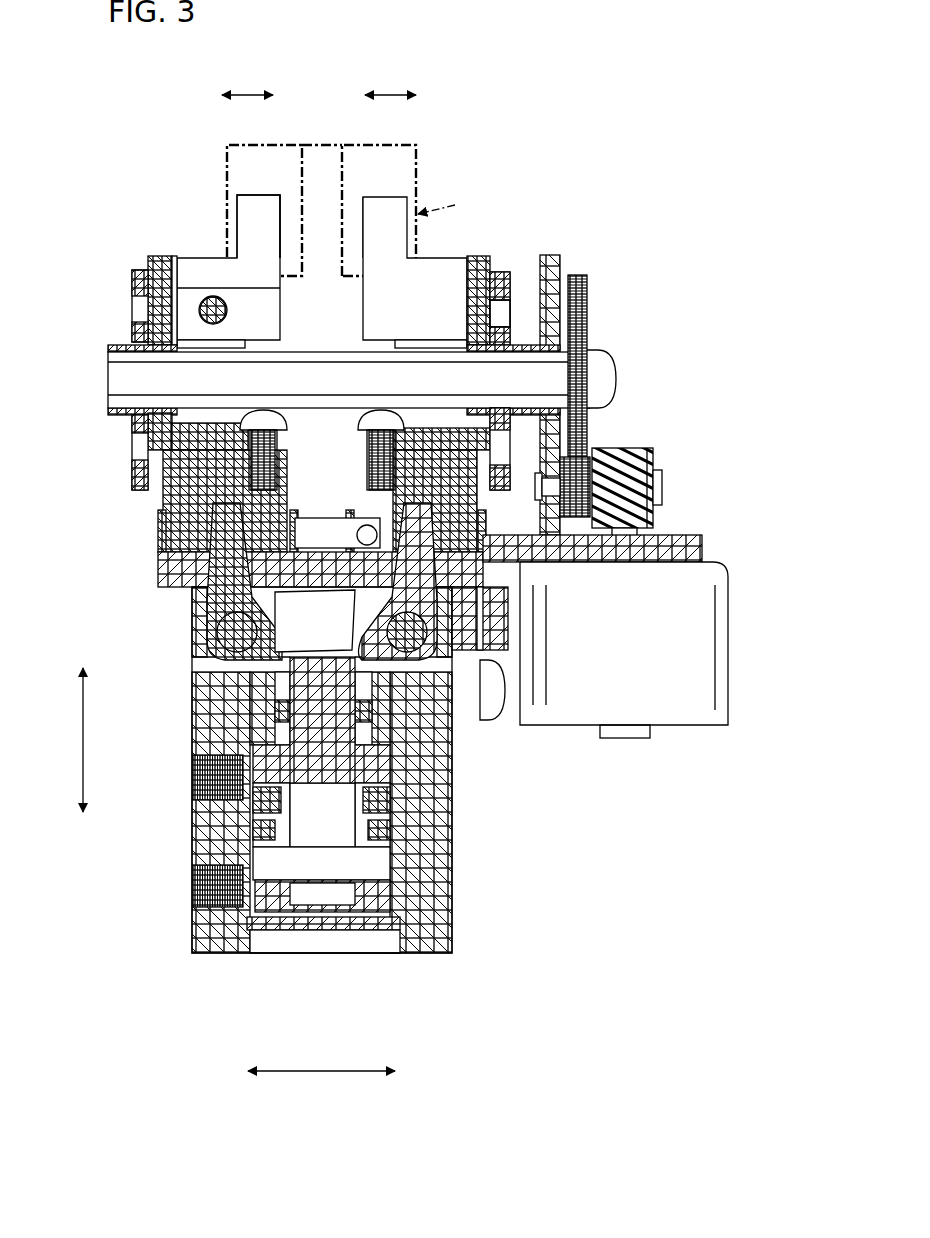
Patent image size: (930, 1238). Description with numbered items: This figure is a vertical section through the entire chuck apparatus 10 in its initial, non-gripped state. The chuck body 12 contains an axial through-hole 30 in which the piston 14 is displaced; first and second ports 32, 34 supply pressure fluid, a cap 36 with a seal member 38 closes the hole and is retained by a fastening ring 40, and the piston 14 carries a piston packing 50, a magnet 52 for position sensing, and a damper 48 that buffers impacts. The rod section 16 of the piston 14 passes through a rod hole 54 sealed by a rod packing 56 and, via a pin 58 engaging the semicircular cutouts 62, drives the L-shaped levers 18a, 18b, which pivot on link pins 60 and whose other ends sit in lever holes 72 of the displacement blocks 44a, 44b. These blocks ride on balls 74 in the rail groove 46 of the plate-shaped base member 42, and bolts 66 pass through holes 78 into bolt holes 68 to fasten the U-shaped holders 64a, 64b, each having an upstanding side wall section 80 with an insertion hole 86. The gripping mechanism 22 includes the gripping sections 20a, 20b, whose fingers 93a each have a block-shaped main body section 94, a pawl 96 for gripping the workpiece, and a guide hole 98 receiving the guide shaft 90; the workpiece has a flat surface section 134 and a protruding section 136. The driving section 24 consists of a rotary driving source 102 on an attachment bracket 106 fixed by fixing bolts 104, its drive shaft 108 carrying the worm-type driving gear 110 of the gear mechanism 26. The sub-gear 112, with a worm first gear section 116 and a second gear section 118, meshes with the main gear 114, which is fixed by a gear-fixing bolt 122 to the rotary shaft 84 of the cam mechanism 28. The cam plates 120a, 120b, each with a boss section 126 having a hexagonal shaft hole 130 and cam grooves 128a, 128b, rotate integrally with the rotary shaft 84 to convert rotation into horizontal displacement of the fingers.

The chuck apparatus 10 is at (556, 79).
The chuck body 12 is at (371, 798).
The piston 14 is at (322, 812).
The rod section 16 is at (260, 695).
The lever 18a is at (215, 616).
The lever 18b is at (442, 596).
The gripping section 20a is at (311, 253).
The gripping section 20b is at (400, 190).
The gripping mechanism 22 is at (362, 193).
The driving section 24 is at (652, 650).
The gear mechanism 26 is at (630, 438).
The cam mechanism 28 is at (131, 282).
The through-hole 30 is at (250, 948).
The first port 32 is at (197, 781).
The second port 34 is at (197, 887).
The cap 36 is at (350, 954).
The seal member 38 is at (390, 904).
The fastening ring 40 is at (386, 948).
The base member 42 is at (157, 572).
The displacement block 44a is at (176, 503).
The displacement block 44b is at (460, 503).
The rail groove 46 is at (318, 604).
The damper 48 is at (385, 776).
The piston packing 50 is at (391, 829).
The magnet 52 is at (391, 801).
The rod hole 54 is at (372, 740).
The rod packing 56 is at (275, 711).
The pin 58 is at (275, 640).
The link pin 60 is at (217, 632).
The cutout 62 is at (432, 648).
The holder 64a is at (160, 258).
The holder 64b is at (480, 260).
The bolt 66 is at (263, 410).
The bolt hole 68 is at (366, 436).
The lever hole 72 is at (160, 530).
The ball 74 is at (364, 533).
The hole 78 is at (250, 432).
The side wall section 80 is at (140, 333).
The rotary shaft 84 is at (322, 360).
The insertion hole 86 is at (171, 350).
The guide shaft 90 is at (212, 296).
The finger 93a is at (250, 250).
The main body section 94 is at (362, 300).
The pawl 96 is at (272, 212).
The guide hole 98 is at (227, 311).
The rotary driving source 102 is at (716, 665).
The fixing bolt 104 is at (495, 692).
The attachment bracket 106 is at (551, 258).
The drive shaft 108 is at (624, 562).
The driving gear 110 is at (657, 465).
The sub-gear 112 is at (664, 486).
The main gear 114 is at (590, 330).
The first gear section 116 is at (652, 452).
The second gear section 118 is at (580, 475).
The cam plate 120a is at (132, 473).
The cam plate 120b is at (500, 318).
The gear-fixing bolt 122 is at (610, 380).
The boss section 126 is at (118, 411).
The cam groove 128a is at (140, 452).
The cam groove 128b is at (142, 305).
The shaft hole 130 is at (115, 349).
The flat surface section 134 is at (322, 160).
The protruding section 136 is at (256, 160).